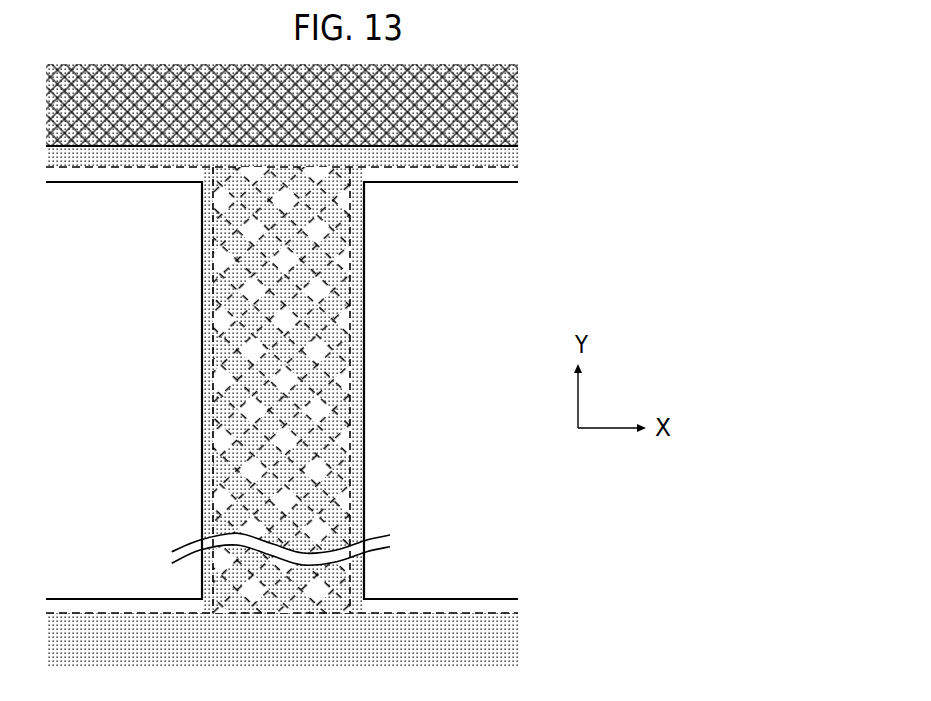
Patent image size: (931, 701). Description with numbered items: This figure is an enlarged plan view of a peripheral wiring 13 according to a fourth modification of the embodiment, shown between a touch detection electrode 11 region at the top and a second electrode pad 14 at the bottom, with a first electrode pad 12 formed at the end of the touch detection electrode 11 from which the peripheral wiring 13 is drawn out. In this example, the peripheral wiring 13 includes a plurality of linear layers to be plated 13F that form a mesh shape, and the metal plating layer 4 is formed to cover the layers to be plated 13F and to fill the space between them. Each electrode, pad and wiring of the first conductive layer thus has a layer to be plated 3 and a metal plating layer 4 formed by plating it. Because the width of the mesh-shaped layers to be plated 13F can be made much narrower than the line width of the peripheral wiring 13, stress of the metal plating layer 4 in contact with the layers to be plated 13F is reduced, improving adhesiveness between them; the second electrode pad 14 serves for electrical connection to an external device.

The touch detection electrode 11 is at (498, 105).
The first electrode pad 12 is at (500, 175).
The peripheral wiring 13 is at (335, 243).
The linear layer to be plated 13F is at (210, 345).
The layer to be plated 3 is at (210, 236).
The metal plating layer 4 is at (210, 290).
The second electrode pad 14 is at (500, 607).